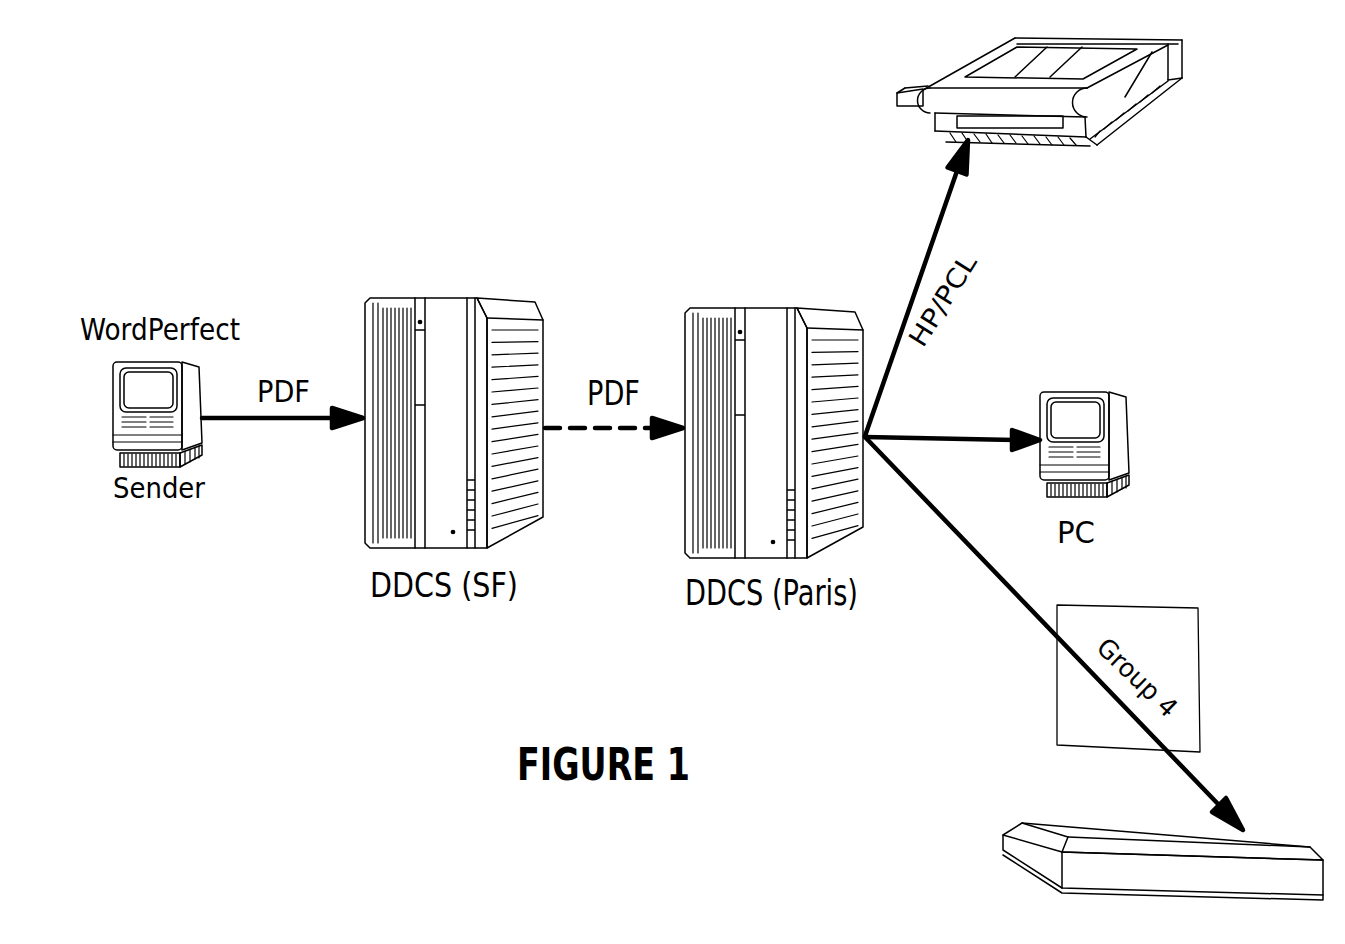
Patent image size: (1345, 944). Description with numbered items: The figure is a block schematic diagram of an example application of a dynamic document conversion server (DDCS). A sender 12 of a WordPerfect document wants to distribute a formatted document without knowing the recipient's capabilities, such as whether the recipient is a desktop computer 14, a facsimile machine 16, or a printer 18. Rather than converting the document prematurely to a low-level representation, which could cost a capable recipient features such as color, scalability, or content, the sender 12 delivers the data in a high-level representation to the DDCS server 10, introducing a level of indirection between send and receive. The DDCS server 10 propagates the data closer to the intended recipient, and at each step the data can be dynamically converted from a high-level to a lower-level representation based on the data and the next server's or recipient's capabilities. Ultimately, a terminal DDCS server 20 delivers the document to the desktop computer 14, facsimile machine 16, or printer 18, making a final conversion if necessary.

The DDCS server 10 is at (454, 403).
The sender 12 is at (198, 428).
The desktop computer 14 is at (1106, 421).
The facsimile machine 16 is at (1138, 835).
The printer 18 is at (1039, 117).
The terminal DDCS server 20 is at (774, 413).